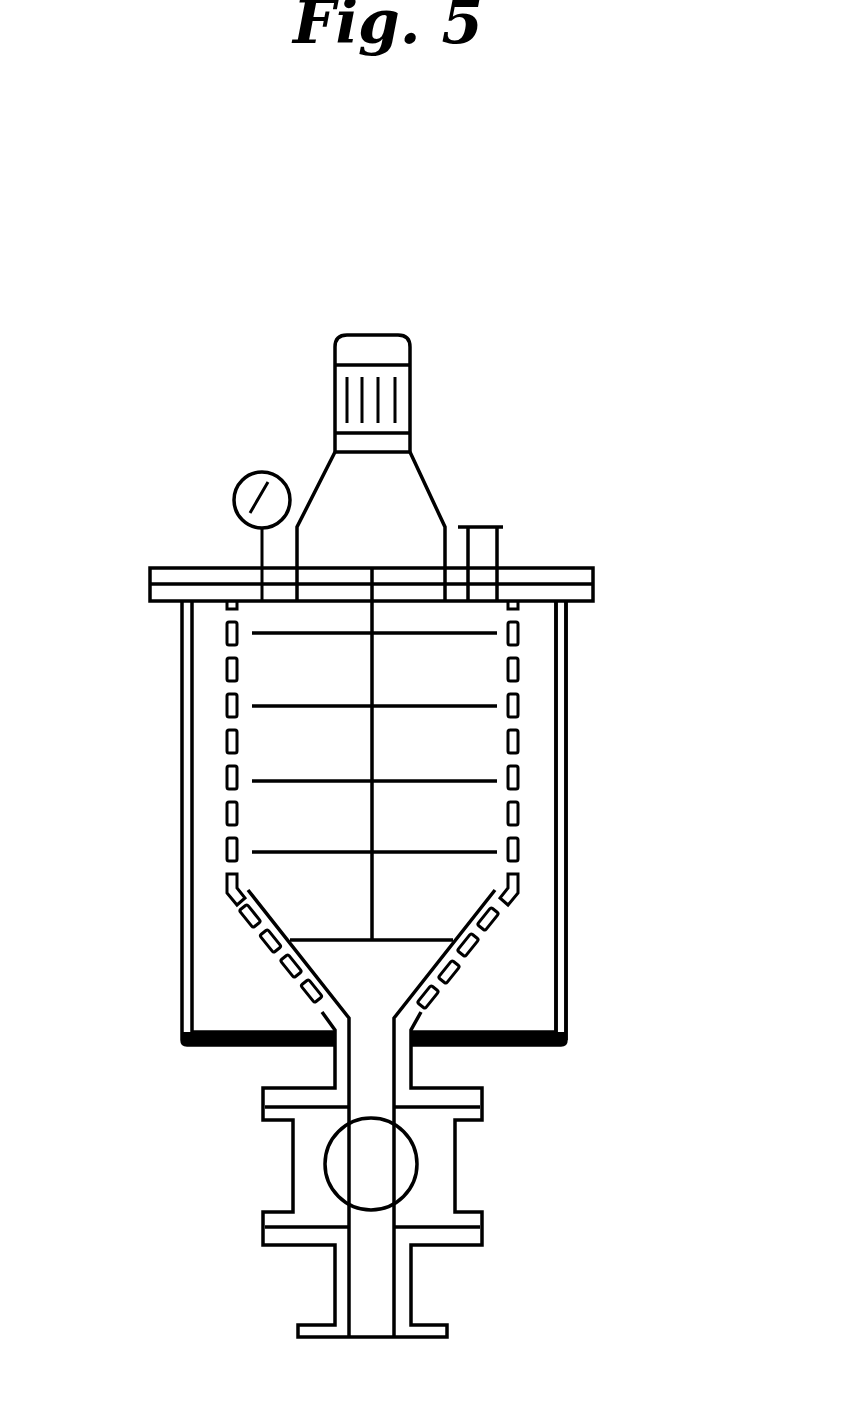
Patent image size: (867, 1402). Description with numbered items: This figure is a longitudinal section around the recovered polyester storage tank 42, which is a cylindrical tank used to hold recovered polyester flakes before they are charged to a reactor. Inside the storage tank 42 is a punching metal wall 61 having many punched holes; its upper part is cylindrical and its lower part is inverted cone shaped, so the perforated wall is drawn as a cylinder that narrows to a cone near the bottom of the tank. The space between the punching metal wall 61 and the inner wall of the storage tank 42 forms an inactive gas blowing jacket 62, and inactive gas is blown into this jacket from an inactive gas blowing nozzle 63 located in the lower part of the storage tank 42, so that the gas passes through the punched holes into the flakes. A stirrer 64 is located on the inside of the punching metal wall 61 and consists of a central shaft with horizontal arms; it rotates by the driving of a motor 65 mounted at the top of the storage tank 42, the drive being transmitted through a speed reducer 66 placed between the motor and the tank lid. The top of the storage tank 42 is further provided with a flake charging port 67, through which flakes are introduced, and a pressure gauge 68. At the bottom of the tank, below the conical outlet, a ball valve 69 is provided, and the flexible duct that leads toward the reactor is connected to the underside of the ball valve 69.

The recovered polyester storage tank 42 is at (182, 790).
The punching metal wall 61 is at (518, 702).
The inactive gas blowing jacket 62 is at (542, 802).
The inactive gas blowing nozzle 63 is at (558, 962).
The stirrer 64 is at (282, 782).
The motor 65 is at (340, 410).
The speed reducer 66 is at (407, 477).
The flake charging port 67 is at (482, 527).
The pressure gauge 68 is at (248, 477).
The ball valve 69 is at (415, 1147).